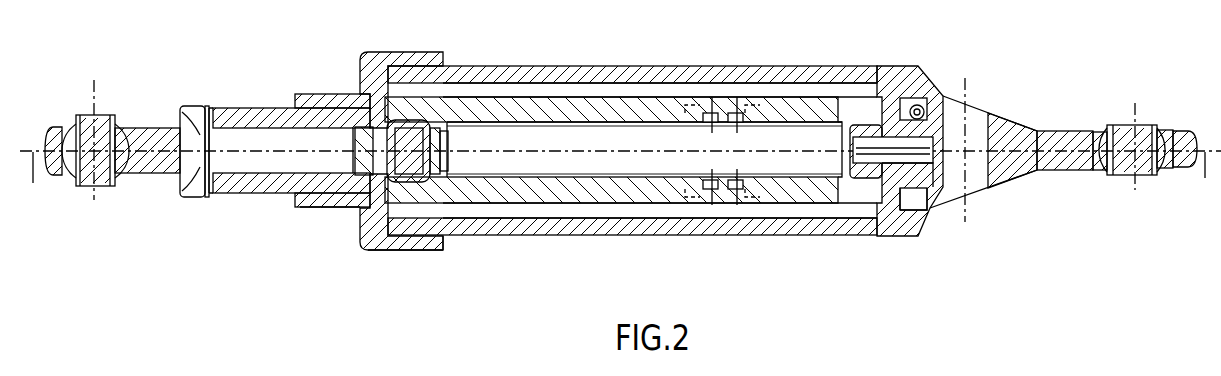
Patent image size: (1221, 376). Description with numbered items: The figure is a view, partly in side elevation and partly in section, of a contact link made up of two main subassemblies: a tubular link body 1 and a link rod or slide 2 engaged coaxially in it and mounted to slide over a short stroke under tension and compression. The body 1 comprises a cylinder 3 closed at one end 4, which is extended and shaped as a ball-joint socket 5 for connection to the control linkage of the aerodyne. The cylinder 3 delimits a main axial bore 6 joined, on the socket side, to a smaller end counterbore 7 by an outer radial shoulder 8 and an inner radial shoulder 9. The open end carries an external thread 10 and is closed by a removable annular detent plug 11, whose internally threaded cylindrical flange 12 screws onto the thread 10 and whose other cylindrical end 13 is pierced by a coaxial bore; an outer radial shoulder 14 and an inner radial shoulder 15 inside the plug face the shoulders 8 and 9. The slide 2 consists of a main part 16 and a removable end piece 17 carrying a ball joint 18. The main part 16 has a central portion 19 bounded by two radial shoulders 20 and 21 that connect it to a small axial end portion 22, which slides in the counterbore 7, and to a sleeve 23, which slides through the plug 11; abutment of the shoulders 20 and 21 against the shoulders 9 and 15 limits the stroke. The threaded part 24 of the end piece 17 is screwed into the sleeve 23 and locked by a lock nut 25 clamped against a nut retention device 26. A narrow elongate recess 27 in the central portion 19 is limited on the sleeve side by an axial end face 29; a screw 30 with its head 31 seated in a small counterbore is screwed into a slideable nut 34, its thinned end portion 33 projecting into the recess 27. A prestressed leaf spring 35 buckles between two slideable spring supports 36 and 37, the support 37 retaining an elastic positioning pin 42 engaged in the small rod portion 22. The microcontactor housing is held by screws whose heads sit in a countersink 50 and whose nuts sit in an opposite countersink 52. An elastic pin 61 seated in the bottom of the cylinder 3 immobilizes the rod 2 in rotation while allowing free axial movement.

The tubular link body 1 is at (603, 242).
The link rod or slide 2 is at (289, 125).
The cylinder 3 is at (700, 227).
The closed end 4 is at (1032, 168).
The ball-joint socket 5 is at (1148, 163).
The main axial bore 6 is at (518, 210).
The end counterbore 7 is at (968, 173).
The outer radial shoulder 8 is at (890, 165).
The inner radial shoulder 9 is at (913, 193).
The external thread 10 is at (446, 250).
The annular detent plug 11 is at (372, 149).
The internally threaded cylindrical flange 12 is at (407, 250).
The cylindrical end 13 is at (295, 200).
The outer radial shoulder 14 is at (367, 233).
The inner radial shoulder 15 is at (320, 213).
The main part 16 is at (668, 93).
The end piece 17 is at (130, 120).
The ball joint 18 is at (72, 137).
The central portion 19 is at (550, 110).
The radial shoulder 20 is at (883, 92).
The radial shoulder 21 is at (372, 60).
The small axial end portion 22 is at (940, 132).
The sleeve 23 is at (278, 115).
The threaded part 24 is at (237, 143).
The lock nut 25 is at (196, 110).
The nut retention device 26 is at (208, 108).
The recess 27 is at (610, 127).
The axial end face 29 is at (405, 118).
The screw 30 is at (417, 133).
The screw head 31 is at (365, 147).
The thinned end portion 33 is at (440, 137).
The nut 34 is at (405, 130).
The leaf spring 35 is at (638, 160).
The spring support 36 is at (450, 163).
The spring support 37 is at (863, 130).
The elastic positioning pin 42 is at (903, 193).
The countersink 50 is at (752, 197).
The countersink 52 is at (743, 107).
The elastic pin 61 is at (923, 102).